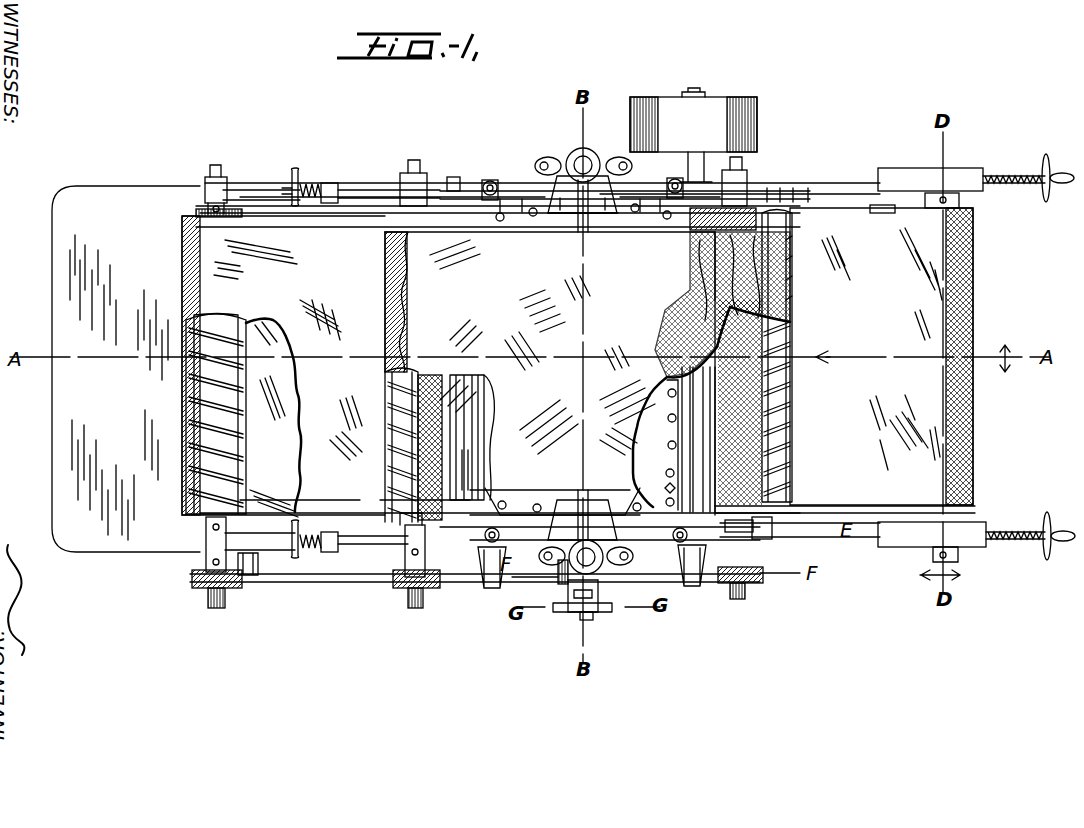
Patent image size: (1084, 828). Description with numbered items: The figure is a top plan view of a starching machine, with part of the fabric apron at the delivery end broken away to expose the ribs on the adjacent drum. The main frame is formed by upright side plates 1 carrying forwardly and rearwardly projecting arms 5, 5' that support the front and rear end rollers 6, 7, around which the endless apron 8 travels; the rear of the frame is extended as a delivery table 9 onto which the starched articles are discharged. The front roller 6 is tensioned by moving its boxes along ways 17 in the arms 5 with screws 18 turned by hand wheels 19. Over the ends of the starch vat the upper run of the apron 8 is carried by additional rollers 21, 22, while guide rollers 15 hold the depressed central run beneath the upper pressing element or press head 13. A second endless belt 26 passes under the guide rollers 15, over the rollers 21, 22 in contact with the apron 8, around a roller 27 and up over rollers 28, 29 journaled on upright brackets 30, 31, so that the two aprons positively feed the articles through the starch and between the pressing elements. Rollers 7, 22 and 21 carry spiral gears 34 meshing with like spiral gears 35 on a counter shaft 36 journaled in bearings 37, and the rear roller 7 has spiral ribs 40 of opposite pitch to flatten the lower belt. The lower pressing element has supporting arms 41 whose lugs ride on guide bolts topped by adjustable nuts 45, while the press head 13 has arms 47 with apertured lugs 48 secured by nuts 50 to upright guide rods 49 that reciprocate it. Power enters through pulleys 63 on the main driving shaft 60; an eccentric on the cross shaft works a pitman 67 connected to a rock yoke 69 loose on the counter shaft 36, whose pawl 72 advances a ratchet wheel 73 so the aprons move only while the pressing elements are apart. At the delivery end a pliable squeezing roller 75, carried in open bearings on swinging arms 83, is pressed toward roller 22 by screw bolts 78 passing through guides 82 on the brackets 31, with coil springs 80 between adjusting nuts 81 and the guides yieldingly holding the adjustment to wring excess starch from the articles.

The side plates 1 is at (845, 184).
The forwardly projecting arms 5 is at (938, 357).
The rearwardly projecting arms 5' is at (252, 381).
The front end roller 6 is at (972, 498).
The rear end roller 7 is at (200, 508).
The endless apron 8 is at (912, 406).
The delivery table 9 is at (60, 410).
The upper pressing element 13 is at (656, 435).
The upper guide rollers 15 is at (478, 458).
The lengthwise ways 17 is at (1045, 156).
The screws 18 is at (1012, 174).
The hand wheels 19 is at (1046, 560).
The front additional roller 21 is at (752, 528).
The rear additional roller 22 is at (404, 556).
The separate endless belt 26 is at (642, 290).
The roller 27 is at (786, 384).
The front upper roller 28 is at (670, 372).
The rear upper roller 29 is at (395, 393).
The front upright bracket 30 is at (762, 186).
The rear upright bracket 31 is at (342, 204).
The spiral gears 34 is at (196, 586).
The counter shaft spiral gears 35 is at (214, 610).
The counter shaft 36 is at (324, 584).
The bearings 37 is at (250, 580).
The spiral ribs 40 is at (190, 430).
The supporting arms 41 is at (515, 196).
The adjustable nuts 45 is at (490, 182).
The upwardly extending arms 47 is at (580, 228).
The apertured lugs 48 is at (590, 158).
The guide rods 49 is at (580, 156).
The nuts 50 is at (565, 160).
The main driving shaft 60 is at (695, 160).
The pulleys 63 is at (757, 130).
The pitman 67 is at (602, 620).
The rock arm or yoke 69 is at (600, 612).
The pawl 72 is at (568, 605).
The ratchet wheel 73 is at (560, 583).
The pliable squeezing roller 75 is at (470, 405).
The screw bolts 78 is at (358, 188).
The coil springs 80 is at (312, 184).
The adjusting nuts 81 is at (292, 180).
The guides 82 is at (330, 204).
The swinging arms 83 is at (452, 178).